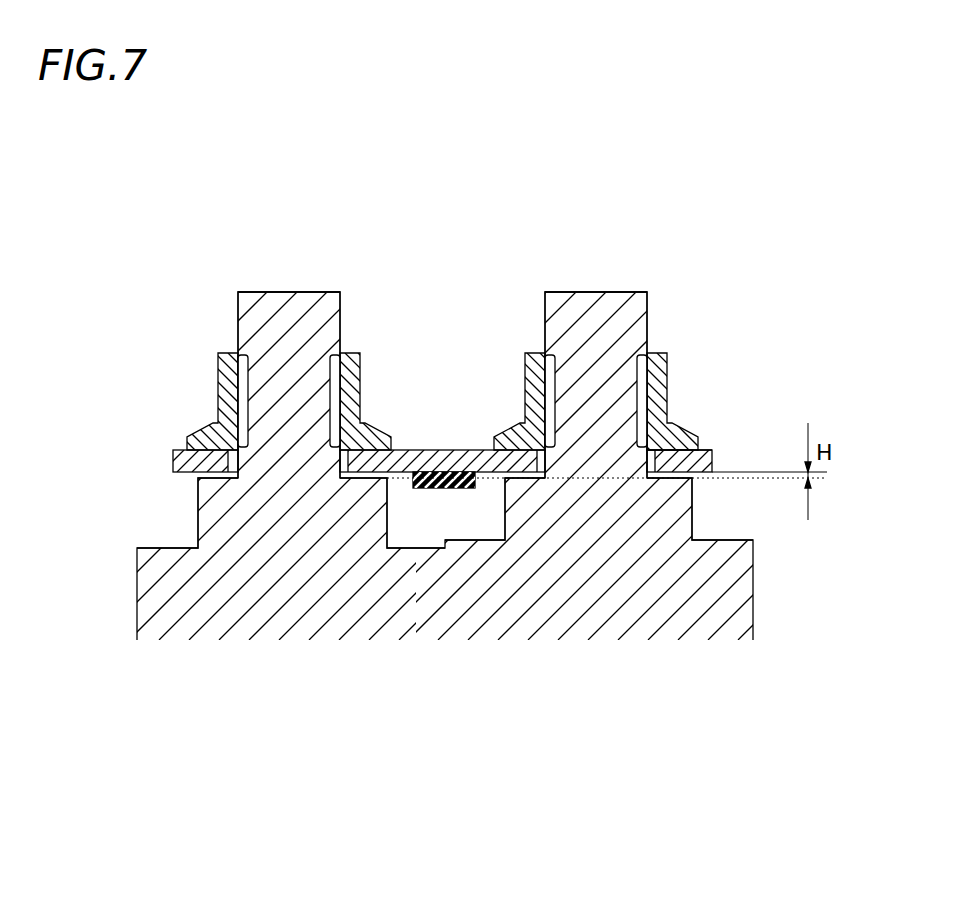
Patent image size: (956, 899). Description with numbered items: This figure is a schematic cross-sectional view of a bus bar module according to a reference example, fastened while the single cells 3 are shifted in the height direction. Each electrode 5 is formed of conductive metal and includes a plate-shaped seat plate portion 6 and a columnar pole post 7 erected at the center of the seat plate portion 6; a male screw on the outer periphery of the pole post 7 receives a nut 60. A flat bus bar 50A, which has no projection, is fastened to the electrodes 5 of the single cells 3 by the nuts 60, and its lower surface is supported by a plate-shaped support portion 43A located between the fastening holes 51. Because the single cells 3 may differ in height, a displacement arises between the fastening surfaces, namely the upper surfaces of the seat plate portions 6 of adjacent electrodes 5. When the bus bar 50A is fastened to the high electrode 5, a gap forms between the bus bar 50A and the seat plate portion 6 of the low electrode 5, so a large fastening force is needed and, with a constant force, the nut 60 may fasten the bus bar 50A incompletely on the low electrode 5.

The single cell 3 is at (277, 573).
The electrode 5 is at (360, 313).
The seat plate portion 6 is at (198, 518).
The pole post 7 is at (277, 292).
The support portion 43A is at (435, 490).
The bus bar 50A is at (707, 443).
The fastening hole 51 is at (240, 467).
The nut 60 is at (218, 387).